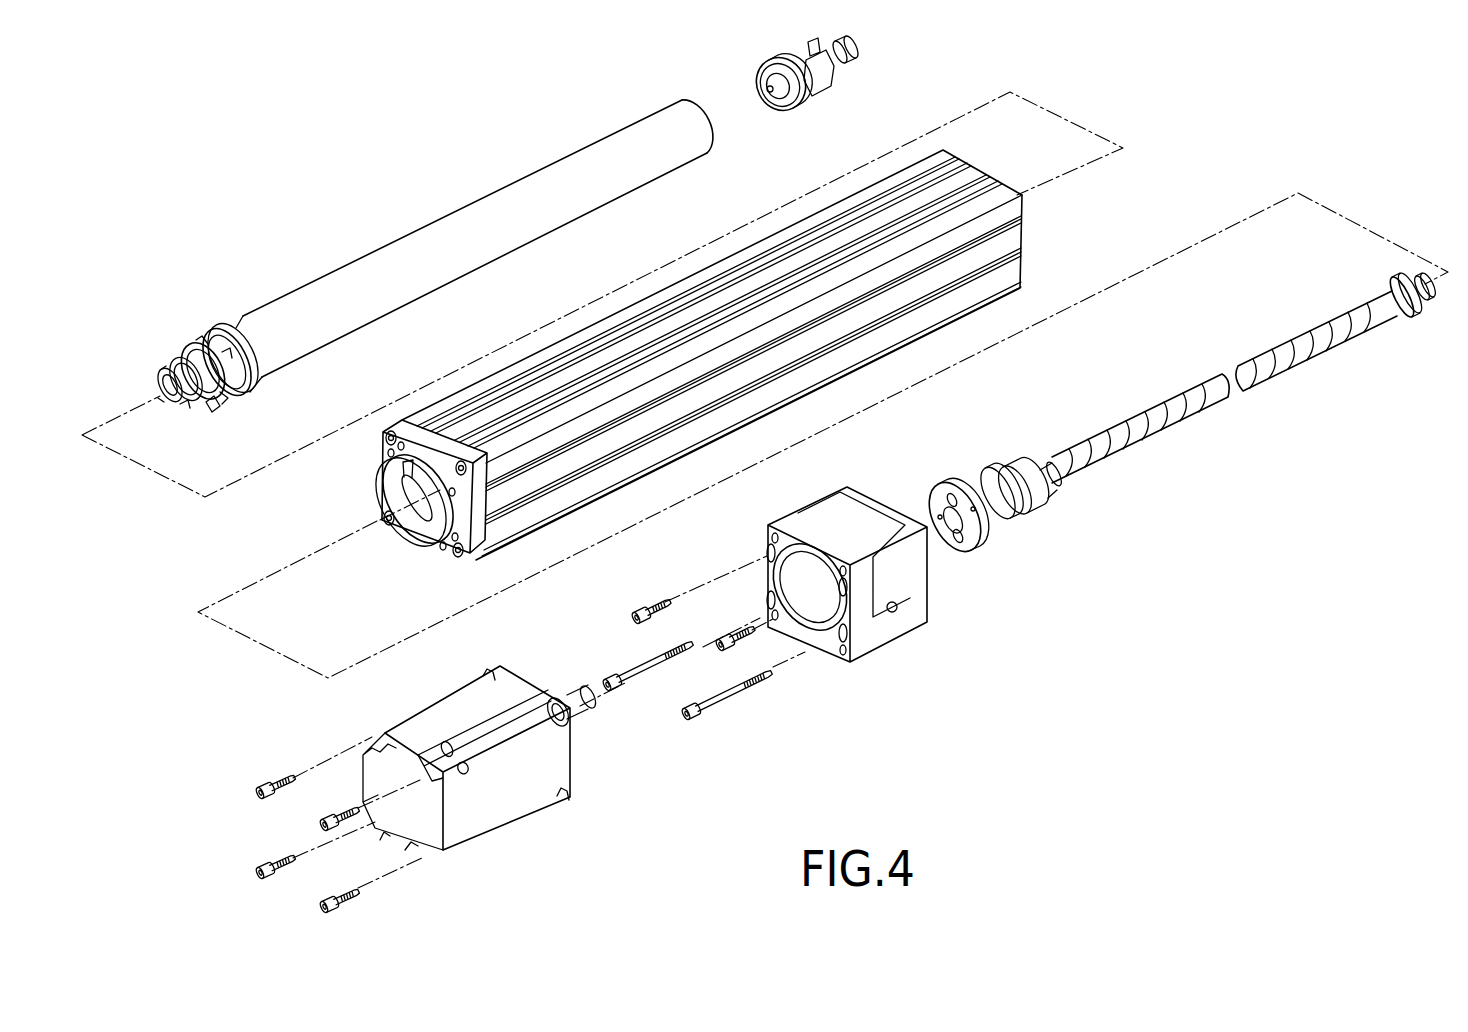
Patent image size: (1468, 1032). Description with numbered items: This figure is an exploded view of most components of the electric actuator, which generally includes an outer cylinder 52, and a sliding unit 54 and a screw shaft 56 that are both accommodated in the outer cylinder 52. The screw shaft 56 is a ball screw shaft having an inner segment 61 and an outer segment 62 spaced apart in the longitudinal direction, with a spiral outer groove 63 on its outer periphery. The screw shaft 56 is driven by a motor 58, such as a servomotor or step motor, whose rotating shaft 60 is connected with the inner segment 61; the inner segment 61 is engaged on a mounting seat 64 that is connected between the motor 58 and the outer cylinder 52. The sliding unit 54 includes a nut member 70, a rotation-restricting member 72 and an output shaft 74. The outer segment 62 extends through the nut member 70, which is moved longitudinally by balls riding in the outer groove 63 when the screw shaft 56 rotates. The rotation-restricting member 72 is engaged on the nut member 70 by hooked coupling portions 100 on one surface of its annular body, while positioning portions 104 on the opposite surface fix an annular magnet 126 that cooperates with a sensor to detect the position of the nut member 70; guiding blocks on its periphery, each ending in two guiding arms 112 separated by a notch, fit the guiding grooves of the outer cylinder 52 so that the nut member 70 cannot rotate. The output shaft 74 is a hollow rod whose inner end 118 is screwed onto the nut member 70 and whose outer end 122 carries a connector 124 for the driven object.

The outer cylinder 52 is at (827, 247).
The sliding unit 54 is at (466, 165).
The screw shaft 56 is at (1273, 372).
The motor 58 is at (510, 795).
The rotating shaft 60 is at (580, 723).
The inner segment 61 is at (1045, 463).
The outer segment 62 is at (1387, 288).
The spiral outer groove 63 is at (1178, 388).
The mounting seat 64 is at (863, 630).
The nut member 70 is at (223, 323).
The rotation-restricting member 72 is at (200, 245).
The output shaft 74 is at (360, 263).
The coupling portion 100 is at (187, 340).
The positioning portion 104 is at (160, 400).
The guiding arm 112 is at (212, 410).
The inner end 118 is at (260, 362).
The outer end 122 is at (637, 127).
The connector 124 is at (825, 97).
The annular magnet 126 is at (157, 365).